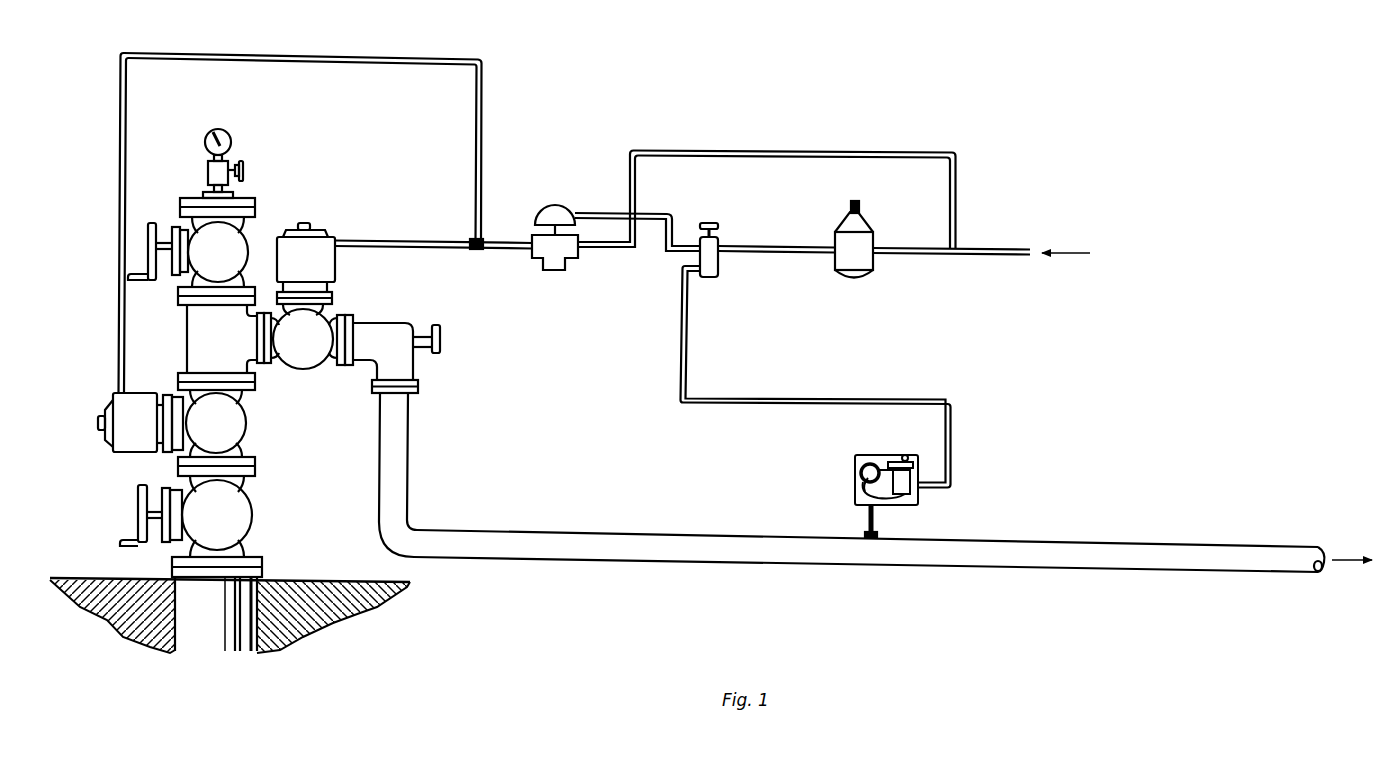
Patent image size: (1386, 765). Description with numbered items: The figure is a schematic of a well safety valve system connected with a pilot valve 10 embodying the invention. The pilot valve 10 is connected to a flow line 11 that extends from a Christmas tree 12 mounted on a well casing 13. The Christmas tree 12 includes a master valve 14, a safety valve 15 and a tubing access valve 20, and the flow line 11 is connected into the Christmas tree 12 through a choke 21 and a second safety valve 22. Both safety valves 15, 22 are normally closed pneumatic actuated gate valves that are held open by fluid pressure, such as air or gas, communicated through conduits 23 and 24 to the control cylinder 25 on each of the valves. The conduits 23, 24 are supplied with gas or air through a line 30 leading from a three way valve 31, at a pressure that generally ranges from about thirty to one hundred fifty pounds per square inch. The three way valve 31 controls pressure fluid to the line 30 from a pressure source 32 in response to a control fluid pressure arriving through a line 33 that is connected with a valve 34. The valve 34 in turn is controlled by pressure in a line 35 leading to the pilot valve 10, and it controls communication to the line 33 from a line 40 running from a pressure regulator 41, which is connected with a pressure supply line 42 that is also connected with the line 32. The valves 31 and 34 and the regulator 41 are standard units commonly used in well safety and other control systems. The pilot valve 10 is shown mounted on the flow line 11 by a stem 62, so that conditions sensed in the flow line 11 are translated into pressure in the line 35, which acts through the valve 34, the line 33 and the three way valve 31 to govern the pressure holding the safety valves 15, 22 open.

The pilot valve 10 is at (852, 473).
The flow line 11 is at (757, 553).
The Christmas tree 12 is at (270, 458).
The well casing 13 is at (202, 643).
The master valve 14 is at (245, 526).
The safety valve 15 is at (243, 425).
The tubing access valve 20 is at (233, 238).
The choke 21 is at (395, 322).
The second safety valve 22 is at (303, 352).
The conduit 23 is at (328, 58).
The conduit 24 is at (375, 242).
The control cylinder 25 is at (322, 266).
The line 30 is at (506, 249).
The three way valve 31 is at (558, 270).
The pressure source 32 is at (612, 250).
The line 33 is at (597, 213).
The valve 34 is at (712, 264).
The line 35 is at (685, 312).
The line 40 is at (752, 247).
The pressure regulator 41 is at (866, 262).
The pressure supply line 42 is at (930, 257).
The sensor stem 62 is at (868, 515).